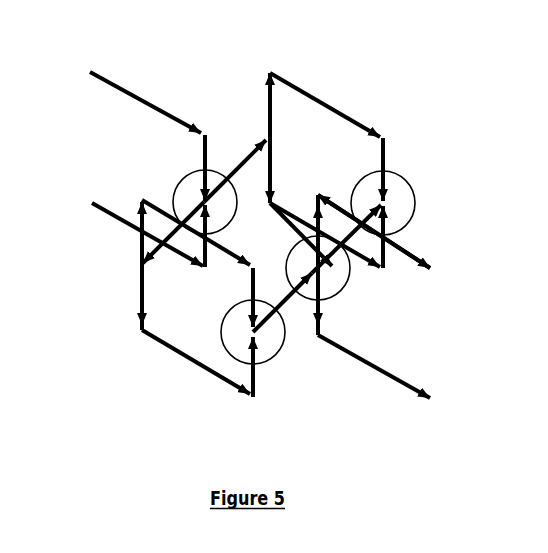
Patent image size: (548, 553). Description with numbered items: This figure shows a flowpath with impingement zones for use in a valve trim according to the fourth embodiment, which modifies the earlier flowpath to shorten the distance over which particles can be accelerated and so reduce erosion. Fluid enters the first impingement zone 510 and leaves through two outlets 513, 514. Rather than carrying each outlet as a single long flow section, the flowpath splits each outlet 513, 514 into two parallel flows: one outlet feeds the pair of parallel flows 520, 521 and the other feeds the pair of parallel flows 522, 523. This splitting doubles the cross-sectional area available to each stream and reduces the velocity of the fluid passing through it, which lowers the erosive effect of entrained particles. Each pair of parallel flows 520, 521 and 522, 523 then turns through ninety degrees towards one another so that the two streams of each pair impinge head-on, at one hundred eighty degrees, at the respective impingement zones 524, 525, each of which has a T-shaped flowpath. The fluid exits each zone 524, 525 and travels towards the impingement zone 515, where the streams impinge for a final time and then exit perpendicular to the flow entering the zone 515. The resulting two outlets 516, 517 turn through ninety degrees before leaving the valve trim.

The first impingement zone 510 is at (187, 183).
The outlet of the first impingement zone 513 is at (170, 230).
The outlet of the first impingement zone 514 is at (237, 150).
The impingement zone 515 is at (353, 285).
The outlet 516 is at (322, 200).
The outlet 517 is at (325, 317).
The parallel flow 520 is at (304, 87).
The parallel flow 521 is at (305, 218).
The parallel flow 522 is at (220, 253).
The parallel flow 523 is at (157, 350).
The impingement zone 524 is at (418, 202).
The impingement zone 525 is at (285, 352).